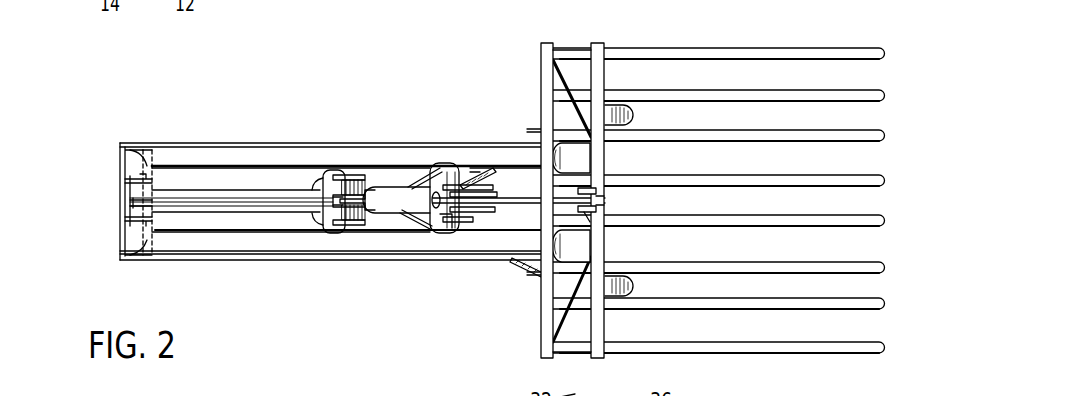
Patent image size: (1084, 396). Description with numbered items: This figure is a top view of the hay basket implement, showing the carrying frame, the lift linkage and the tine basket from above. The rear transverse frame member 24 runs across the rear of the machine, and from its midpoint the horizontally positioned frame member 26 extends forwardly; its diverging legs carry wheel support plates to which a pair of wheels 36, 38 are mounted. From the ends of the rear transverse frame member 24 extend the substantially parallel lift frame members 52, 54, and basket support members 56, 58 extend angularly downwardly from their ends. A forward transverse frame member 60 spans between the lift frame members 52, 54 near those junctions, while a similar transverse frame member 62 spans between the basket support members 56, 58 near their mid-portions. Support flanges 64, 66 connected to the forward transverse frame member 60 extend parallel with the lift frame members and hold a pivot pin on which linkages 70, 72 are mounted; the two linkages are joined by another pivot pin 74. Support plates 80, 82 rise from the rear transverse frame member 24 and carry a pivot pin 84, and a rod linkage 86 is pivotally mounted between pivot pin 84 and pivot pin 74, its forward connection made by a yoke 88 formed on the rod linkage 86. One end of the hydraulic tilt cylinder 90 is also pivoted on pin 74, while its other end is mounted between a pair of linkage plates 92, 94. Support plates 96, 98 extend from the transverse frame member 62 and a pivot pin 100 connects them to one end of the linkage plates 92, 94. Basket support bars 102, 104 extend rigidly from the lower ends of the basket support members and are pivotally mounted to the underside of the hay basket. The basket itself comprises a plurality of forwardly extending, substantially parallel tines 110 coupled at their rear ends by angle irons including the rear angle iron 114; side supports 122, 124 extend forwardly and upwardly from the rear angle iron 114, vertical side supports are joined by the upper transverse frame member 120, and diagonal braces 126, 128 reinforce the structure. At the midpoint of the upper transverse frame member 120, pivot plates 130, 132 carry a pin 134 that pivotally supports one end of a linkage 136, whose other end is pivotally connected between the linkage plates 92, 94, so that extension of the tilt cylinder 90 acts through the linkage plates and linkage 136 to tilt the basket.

The rear transverse frame member 24 is at (133, 165).
The horizontally positioned frame member 26 is at (167, 192).
The wheel 36 is at (622, 116).
The wheel 38 is at (632, 286).
The lift frame member 52 is at (190, 150).
The lift frame member 54 is at (205, 256).
The basket support member 56 is at (427, 152).
The basket support member 58 is at (400, 238).
The forward transverse frame member 60 is at (322, 180).
The transverse frame member 62 is at (445, 170).
The support flange 64 is at (345, 176).
The support flange 66 is at (340, 231).
The linkage 70 is at (373, 170).
The linkage 72 is at (366, 226).
The pivot pin 74 is at (350, 226).
The support plate 80 is at (128, 182).
The support plate 82 is at (128, 219).
The pivot pin 84 is at (132, 232).
The rod linkage 86 is at (198, 200).
The yoke 88 is at (340, 203).
The hydraulic tilt cylinder 90 is at (391, 196).
The linkage plate 92 is at (493, 188).
The linkage plate 94 is at (496, 210).
The support plate 96 is at (489, 178).
The support plate 98 is at (446, 224).
The pivot pin 100 is at (494, 167).
The basket support bar 102 is at (580, 156).
The basket support bar 104 is at (582, 245).
The tines 110 is at (871, 133).
The rear angle iron 114 is at (541, 60).
The upper transverse frame member 120 is at (604, 50).
The side support 122 is at (572, 52).
The side support 124 is at (576, 346).
The diagonal brace 126 is at (566, 84).
The diagonal brace 128 is at (571, 318).
The pivot plate 130 is at (598, 192).
The pivot plate 132 is at (602, 207).
The pin 134 is at (591, 216).
The linkage 136 is at (520, 263).